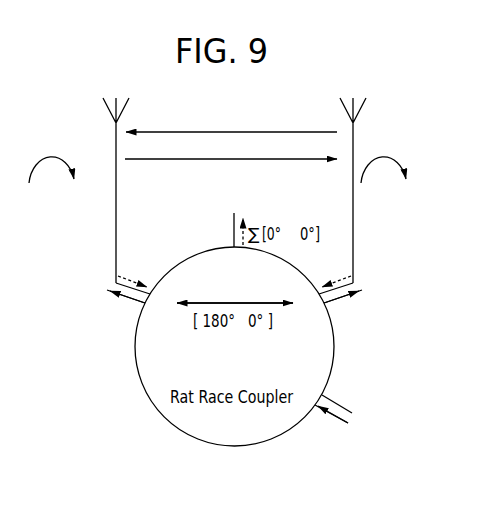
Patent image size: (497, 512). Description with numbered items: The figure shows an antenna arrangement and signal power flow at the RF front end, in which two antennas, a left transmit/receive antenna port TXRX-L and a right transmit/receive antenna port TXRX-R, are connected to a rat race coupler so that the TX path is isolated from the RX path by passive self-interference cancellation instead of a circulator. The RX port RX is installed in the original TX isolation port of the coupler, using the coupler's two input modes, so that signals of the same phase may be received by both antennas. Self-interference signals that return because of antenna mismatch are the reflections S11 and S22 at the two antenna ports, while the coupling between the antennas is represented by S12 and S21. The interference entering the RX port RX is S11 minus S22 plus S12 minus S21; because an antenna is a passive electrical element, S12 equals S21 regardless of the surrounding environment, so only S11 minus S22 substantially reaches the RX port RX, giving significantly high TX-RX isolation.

The antenna reflection SI signal S11 is at (66, 170).
The antenna coupling signal S12 is at (231, 141).
The antenna coupling signal S21 is at (231, 170).
The antenna reflection SI signal S22 is at (399, 170).
The RX port RX is at (234, 219).
The left transmit/receive antenna port TXRX-L is at (90, 190).
The right transmit/receive antenna port TXRX-R is at (378, 190).